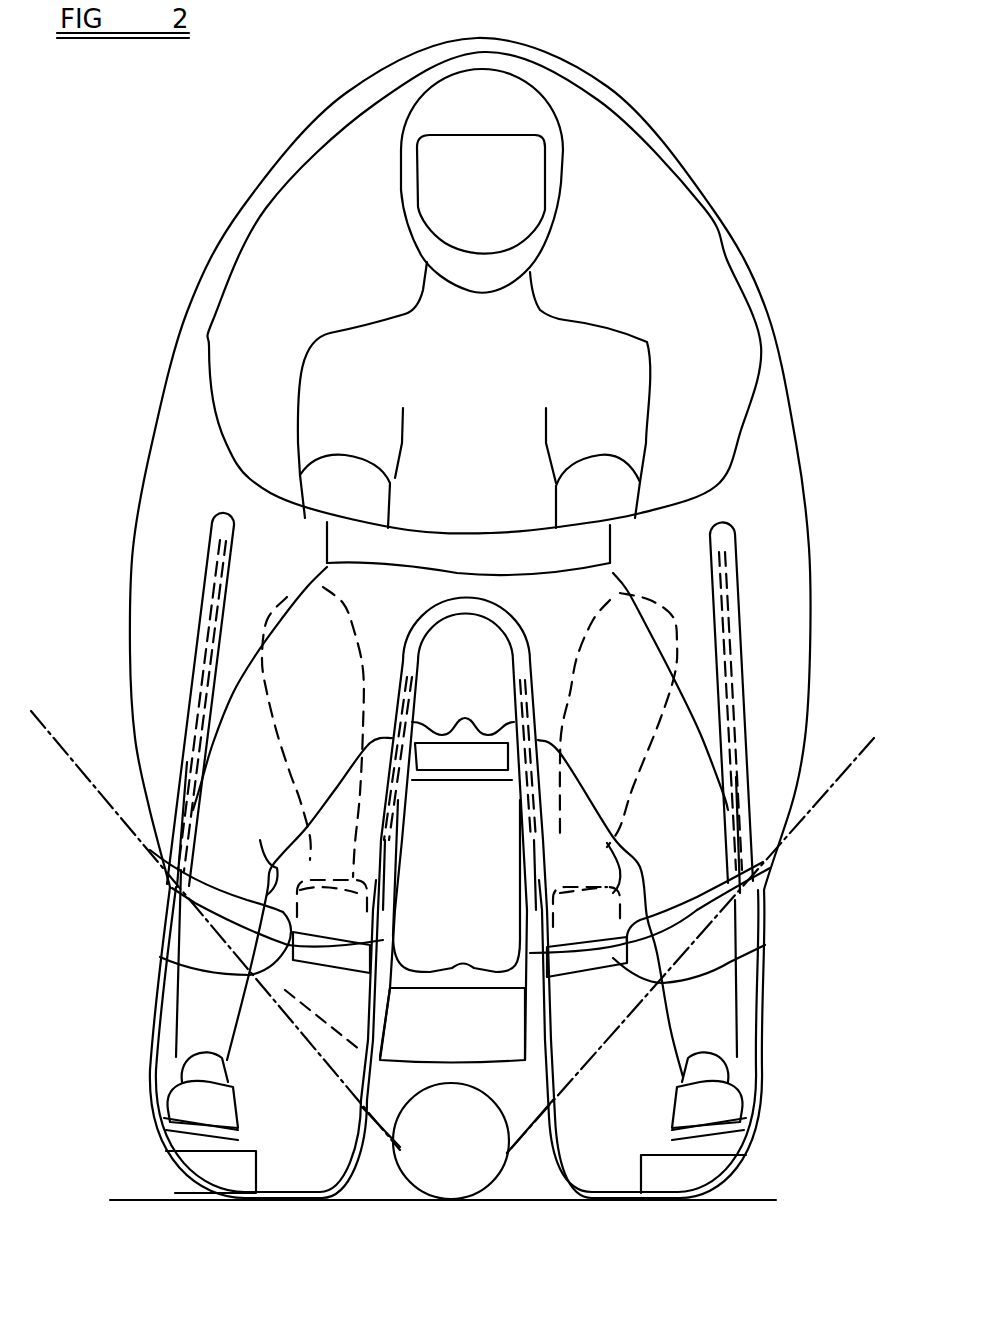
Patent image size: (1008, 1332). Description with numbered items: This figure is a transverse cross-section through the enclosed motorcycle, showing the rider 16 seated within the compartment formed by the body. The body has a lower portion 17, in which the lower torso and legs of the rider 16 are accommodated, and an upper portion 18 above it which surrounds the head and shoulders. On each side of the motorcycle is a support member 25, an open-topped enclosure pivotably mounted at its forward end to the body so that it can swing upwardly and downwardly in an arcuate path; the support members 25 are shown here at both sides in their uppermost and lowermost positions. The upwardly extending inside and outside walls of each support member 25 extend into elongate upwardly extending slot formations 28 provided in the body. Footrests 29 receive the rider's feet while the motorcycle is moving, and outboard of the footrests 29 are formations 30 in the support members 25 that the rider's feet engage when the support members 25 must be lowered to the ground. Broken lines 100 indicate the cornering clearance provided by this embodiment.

The rider 16 is at (622, 371).
The lower portion 17 is at (819, 555).
The upper portion 18 is at (726, 178).
The support member 25 is at (152, 994).
The slot formation 28 is at (197, 645).
The footrest 29 is at (160, 957).
The formation 30 is at (187, 1146).
The broken line 100 is at (116, 812).